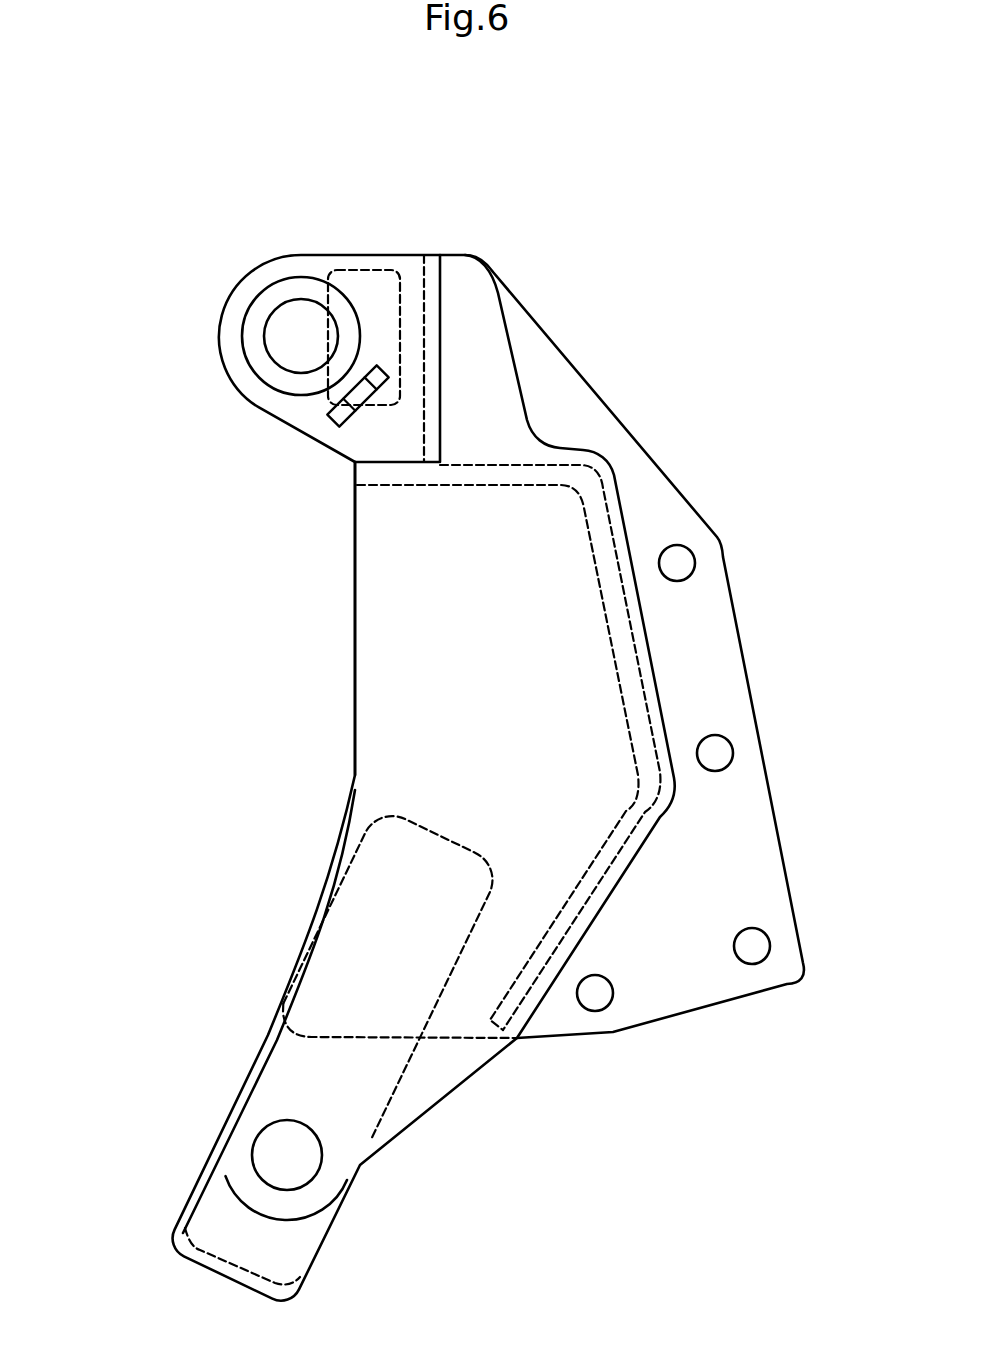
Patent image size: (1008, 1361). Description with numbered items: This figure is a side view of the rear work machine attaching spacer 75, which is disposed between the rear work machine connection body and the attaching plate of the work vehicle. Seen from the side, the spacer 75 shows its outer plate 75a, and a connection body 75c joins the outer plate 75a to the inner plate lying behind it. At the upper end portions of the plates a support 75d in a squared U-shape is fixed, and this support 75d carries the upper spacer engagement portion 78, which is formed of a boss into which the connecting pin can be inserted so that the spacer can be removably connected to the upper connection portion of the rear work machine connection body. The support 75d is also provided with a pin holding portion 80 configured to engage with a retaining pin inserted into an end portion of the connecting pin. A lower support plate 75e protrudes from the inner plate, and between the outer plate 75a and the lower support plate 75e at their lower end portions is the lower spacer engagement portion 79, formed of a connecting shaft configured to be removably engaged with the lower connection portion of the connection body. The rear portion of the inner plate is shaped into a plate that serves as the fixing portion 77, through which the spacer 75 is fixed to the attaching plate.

The rear work machine attaching spacer 75 is at (495, 234).
The outer plate 75a is at (380, 666).
The connection body 75c is at (630, 662).
The support 75d is at (410, 268).
The lower support plate 75e is at (202, 1202).
The fixing portion 77 is at (692, 995).
The upper spacer engagement portion 78 is at (303, 290).
The lower spacer engagement portion 79 is at (310, 1154).
The pin holding portion 80 is at (333, 415).